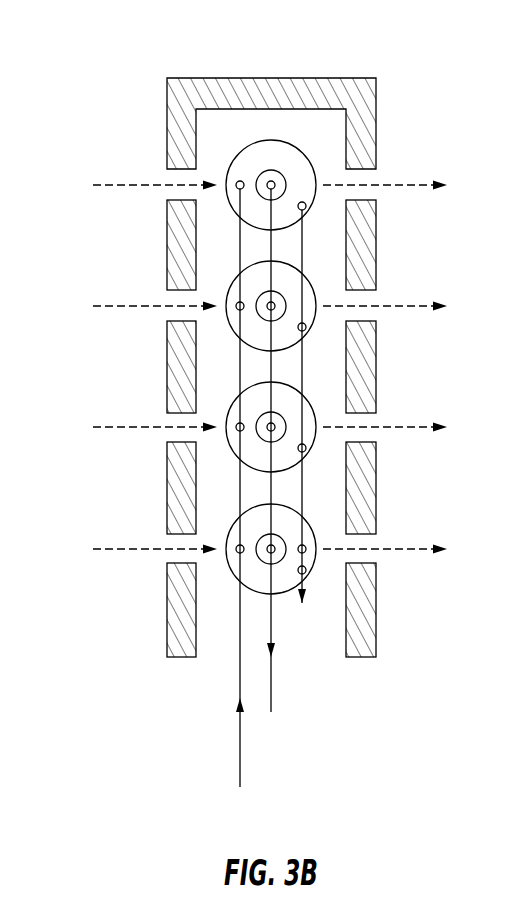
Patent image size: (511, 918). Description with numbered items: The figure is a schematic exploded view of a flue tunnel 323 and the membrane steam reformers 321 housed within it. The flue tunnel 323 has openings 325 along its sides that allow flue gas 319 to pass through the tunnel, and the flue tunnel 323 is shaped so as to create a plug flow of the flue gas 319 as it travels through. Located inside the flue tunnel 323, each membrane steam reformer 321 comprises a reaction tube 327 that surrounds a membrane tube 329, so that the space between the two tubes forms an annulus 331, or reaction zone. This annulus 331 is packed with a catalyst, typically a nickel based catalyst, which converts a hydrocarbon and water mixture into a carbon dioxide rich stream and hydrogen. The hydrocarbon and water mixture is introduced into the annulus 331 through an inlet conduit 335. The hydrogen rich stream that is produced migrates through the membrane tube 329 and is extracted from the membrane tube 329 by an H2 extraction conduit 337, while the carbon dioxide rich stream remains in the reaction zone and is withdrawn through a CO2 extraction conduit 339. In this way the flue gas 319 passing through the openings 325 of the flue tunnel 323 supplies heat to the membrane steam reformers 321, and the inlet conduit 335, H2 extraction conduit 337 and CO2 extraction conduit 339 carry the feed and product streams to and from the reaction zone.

The flue gas 319 is at (118, 184).
The membrane steam reformer 321 is at (313, 285).
The flue tunnel 323 is at (364, 78).
The opening 325 is at (170, 194).
The reaction tube 327 is at (269, 140).
The membrane tube 329 is at (287, 184).
The annulus 331 is at (244, 162).
The inlet conduit 335 is at (240, 770).
The H2 extraction conduit 337 is at (272, 695).
The CO2 extraction conduit 339 is at (302, 612).